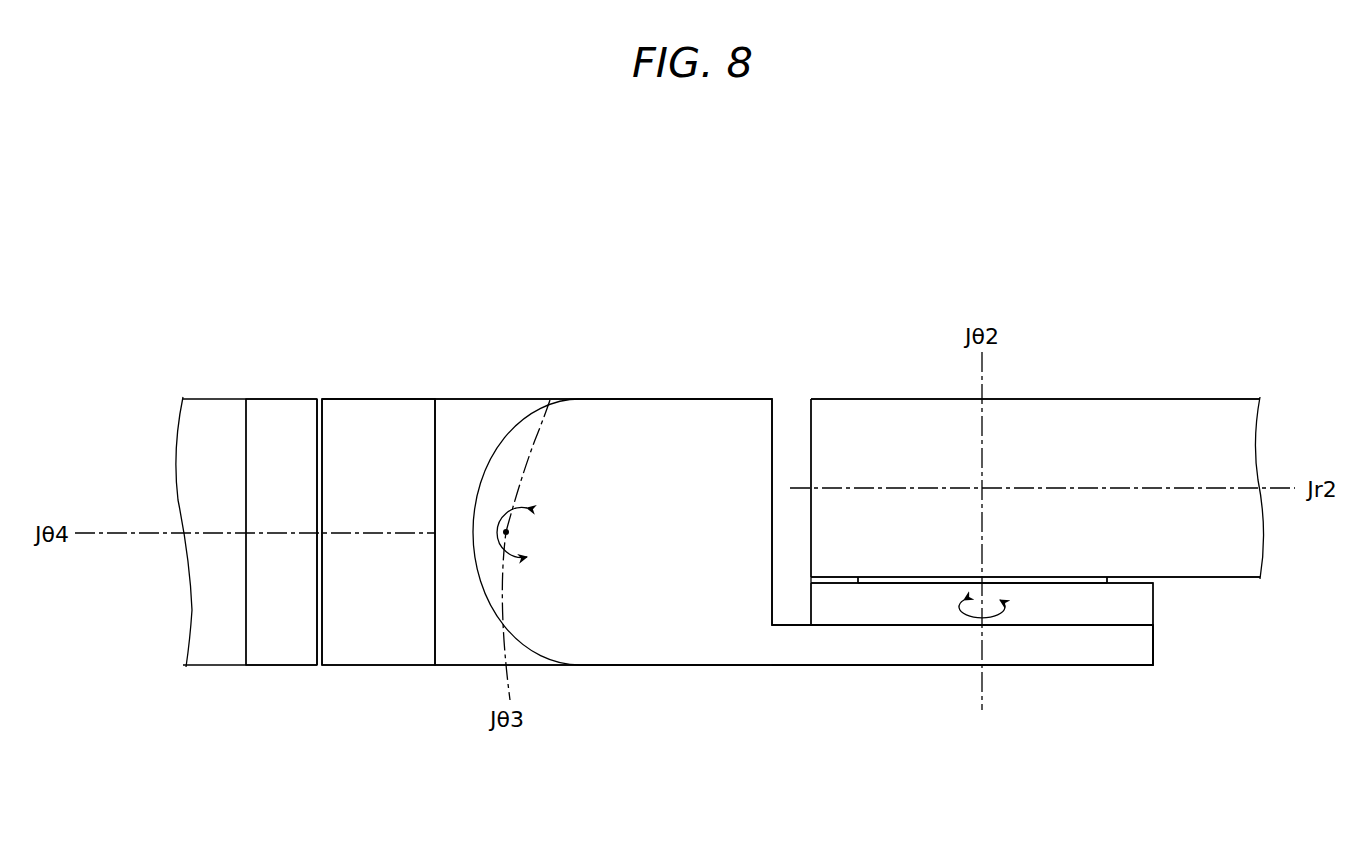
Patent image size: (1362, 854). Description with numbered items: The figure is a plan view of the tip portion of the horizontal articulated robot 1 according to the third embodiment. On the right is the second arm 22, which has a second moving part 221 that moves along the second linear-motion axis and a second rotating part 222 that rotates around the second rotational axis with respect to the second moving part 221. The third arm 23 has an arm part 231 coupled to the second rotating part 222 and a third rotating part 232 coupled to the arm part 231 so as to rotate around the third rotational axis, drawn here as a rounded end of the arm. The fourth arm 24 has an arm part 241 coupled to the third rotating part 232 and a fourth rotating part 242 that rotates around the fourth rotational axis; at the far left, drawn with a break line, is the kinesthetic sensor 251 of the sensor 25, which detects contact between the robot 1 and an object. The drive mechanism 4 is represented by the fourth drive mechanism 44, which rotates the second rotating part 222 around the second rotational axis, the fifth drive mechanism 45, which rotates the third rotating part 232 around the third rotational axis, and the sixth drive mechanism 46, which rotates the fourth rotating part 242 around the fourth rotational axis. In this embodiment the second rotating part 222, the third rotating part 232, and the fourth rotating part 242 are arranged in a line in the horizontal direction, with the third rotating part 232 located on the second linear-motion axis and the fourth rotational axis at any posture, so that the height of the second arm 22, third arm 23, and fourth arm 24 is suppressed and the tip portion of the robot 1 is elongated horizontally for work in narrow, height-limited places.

The robot 1 is at (340, 224).
The second arm 22 is at (1174, 394).
The second moving part 221 is at (1088, 445).
The second rotating part 222 is at (1075, 600).
The third arm 23 is at (691, 394).
The arm part 231 is at (723, 600).
The third rotating part 232 is at (500, 420).
The fourth arm 24 is at (359, 394).
The arm part 241 is at (376, 603).
The fourth rotating part 242 is at (272, 603).
The sensor 25 is at (170, 532).
The kinesthetic sensor 251 is at (195, 595).
The drive mechanism 4 is at (712, 532).
The fourth drive mechanism 44 is at (897, 575).
The fifth drive mechanism 45 is at (548, 397).
The sixth drive mechanism 46 is at (318, 480).